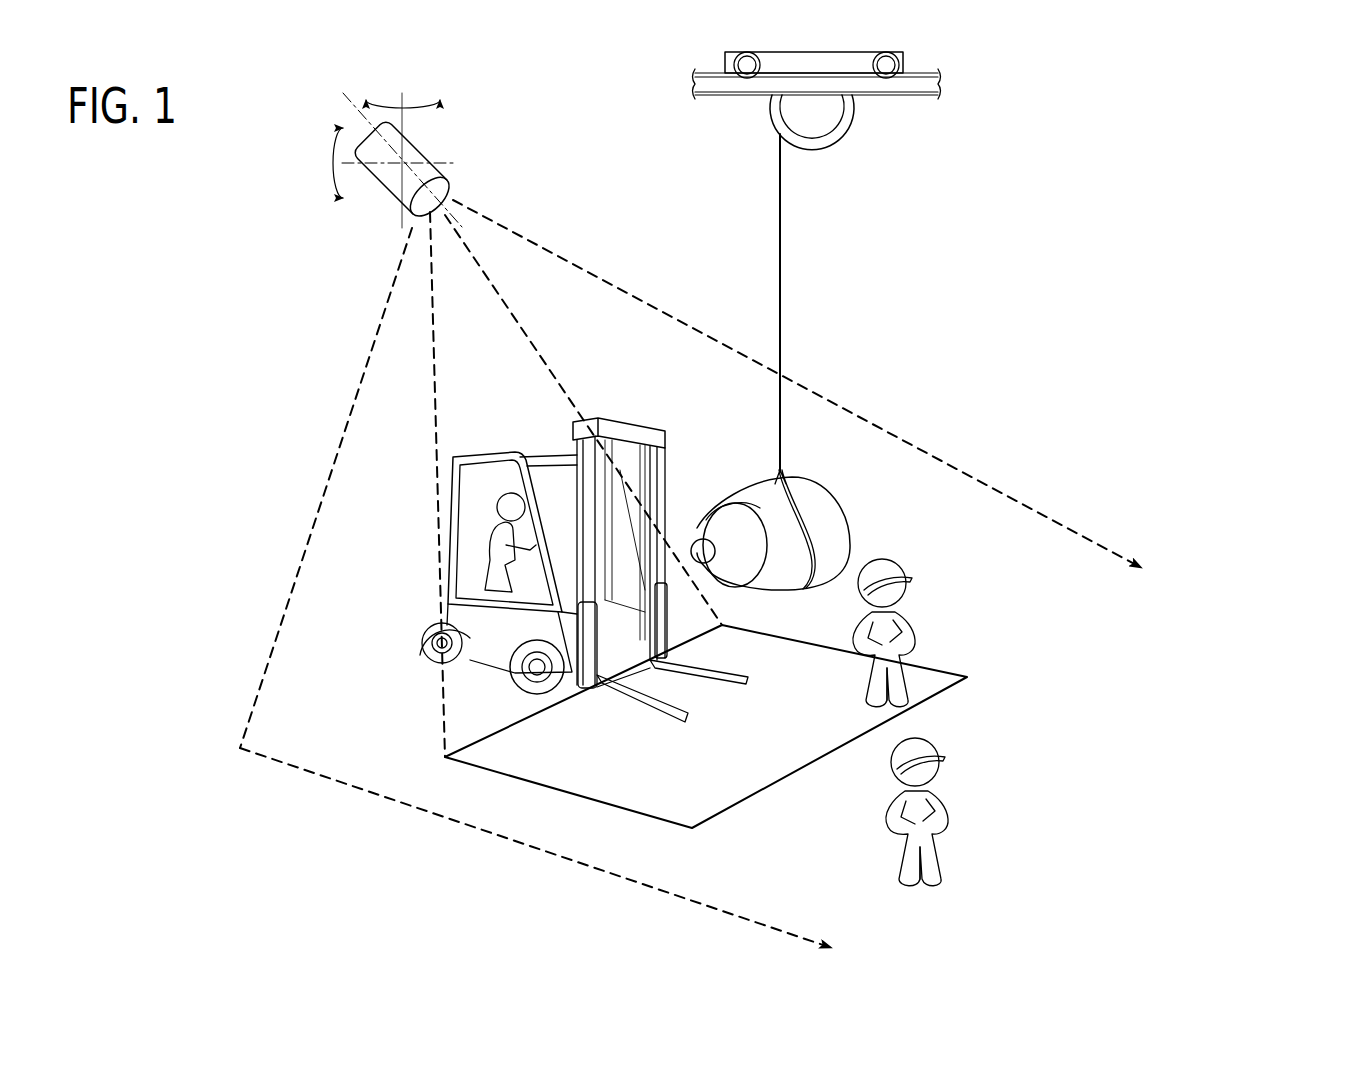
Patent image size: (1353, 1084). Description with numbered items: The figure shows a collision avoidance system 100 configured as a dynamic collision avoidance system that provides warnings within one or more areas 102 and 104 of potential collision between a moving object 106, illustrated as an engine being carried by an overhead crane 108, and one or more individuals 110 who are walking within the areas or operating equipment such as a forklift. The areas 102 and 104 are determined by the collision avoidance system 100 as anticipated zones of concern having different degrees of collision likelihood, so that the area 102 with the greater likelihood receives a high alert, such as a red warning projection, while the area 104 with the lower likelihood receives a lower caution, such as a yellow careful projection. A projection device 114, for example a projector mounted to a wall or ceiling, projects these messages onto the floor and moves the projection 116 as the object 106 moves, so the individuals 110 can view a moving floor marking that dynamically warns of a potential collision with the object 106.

The collision avoidance system 100 is at (1272, 152).
The area 102 is at (575, 738).
The area 104 is at (660, 862).
The moving object 106 is at (842, 524).
The overhead crane 108 is at (852, 122).
The individuals 110 is at (500, 528).
The projection device 114 is at (423, 142).
The projection 116 is at (538, 243).